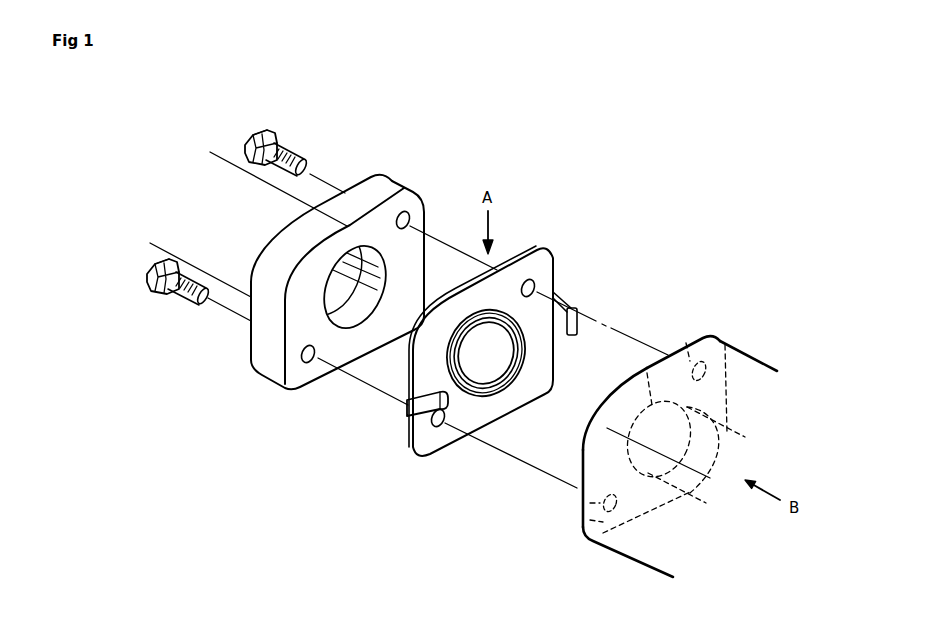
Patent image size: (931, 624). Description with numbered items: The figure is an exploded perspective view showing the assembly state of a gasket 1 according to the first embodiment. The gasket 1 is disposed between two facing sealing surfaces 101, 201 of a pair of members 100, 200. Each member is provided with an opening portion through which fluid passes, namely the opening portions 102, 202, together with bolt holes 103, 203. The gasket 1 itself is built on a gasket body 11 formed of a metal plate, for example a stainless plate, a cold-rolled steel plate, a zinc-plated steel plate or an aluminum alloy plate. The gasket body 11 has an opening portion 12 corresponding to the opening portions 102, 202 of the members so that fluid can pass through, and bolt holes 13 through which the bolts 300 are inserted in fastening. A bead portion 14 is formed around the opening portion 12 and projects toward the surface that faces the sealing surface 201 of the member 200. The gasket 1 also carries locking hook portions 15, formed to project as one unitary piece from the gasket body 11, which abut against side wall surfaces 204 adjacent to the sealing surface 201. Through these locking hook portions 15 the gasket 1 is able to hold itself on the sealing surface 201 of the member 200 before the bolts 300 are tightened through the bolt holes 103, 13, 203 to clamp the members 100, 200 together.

The gasket 1 is at (505, 343).
The gasket body 11 is at (440, 442).
The opening portion 12 is at (507, 362).
The bolt holes 13 is at (537, 285).
The bead portion 14 is at (500, 393).
The locking hook portions 15 is at (569, 310).
The member 100 is at (330, 301).
The sealing surface 101 is at (303, 383).
The opening portion 102 is at (366, 252).
The bolt holes 103 is at (407, 222).
The member 200 is at (649, 450).
The sealing surface 201 is at (588, 529).
The opening portion 202 is at (648, 371).
The bolt holes 203 is at (690, 362).
The side wall surfaces 204 is at (747, 370).
The bolts 300 is at (284, 148).